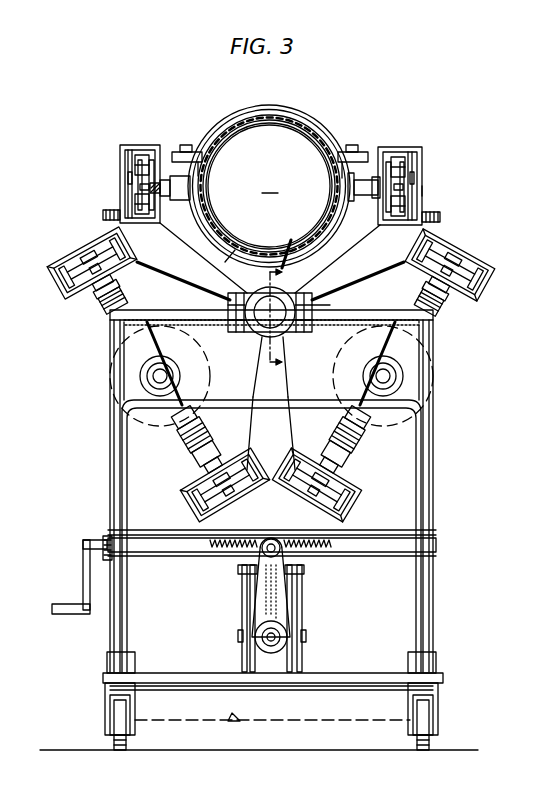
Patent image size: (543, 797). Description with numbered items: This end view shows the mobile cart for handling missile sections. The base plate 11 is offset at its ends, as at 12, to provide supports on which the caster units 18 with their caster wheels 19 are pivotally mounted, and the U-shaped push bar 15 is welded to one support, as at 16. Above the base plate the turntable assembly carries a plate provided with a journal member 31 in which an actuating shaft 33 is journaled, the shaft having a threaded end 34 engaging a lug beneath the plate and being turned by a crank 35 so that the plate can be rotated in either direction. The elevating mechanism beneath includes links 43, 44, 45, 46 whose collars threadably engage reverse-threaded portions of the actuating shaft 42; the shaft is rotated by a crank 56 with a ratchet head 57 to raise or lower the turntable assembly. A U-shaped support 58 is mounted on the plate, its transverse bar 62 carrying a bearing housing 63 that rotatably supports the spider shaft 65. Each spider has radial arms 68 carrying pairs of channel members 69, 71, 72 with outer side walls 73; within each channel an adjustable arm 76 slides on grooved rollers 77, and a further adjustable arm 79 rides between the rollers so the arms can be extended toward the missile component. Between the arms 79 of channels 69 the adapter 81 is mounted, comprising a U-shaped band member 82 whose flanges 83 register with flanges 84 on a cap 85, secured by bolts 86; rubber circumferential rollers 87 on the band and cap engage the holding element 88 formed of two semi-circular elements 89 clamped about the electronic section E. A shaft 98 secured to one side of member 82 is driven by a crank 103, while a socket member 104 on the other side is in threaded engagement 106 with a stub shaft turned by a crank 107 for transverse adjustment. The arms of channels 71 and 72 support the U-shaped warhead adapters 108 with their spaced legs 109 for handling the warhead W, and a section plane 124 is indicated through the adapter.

The base plate 11 is at (228, 724).
The offset 12 is at (312, 733).
The push bar 15 is at (214, 400).
The weld 16 is at (106, 676).
The caster unit 18 is at (110, 702).
The caster wheel 19 is at (114, 740).
The journal member 31 is at (104, 545).
The actuating shaft 33 is at (182, 550).
The threaded end 34 is at (232, 552).
The crank 35 is at (70, 606).
The actuating shaft 42 is at (286, 636).
The link 43 is at (242, 612).
The link 44 is at (250, 655).
The link 45 is at (302, 648).
The link 46 is at (302, 663).
The crank 56 is at (276, 581).
The ratchet head 57 is at (278, 632).
The U-shaped support 58 is at (110, 340).
The transverse bar 62 is at (186, 318).
The bearing housing 63 is at (296, 310).
The shaft 65 is at (332, 307).
The arm 68 is at (178, 272).
The channel member 69 is at (120, 146).
The channel member 71 is at (470, 252).
The channel member 72 is at (60, 280).
The outer side wall 73 is at (424, 190).
The adjustable arm 76 is at (128, 178).
The grooved roller 77 is at (142, 160).
The adjustable arm 79 is at (148, 187).
The adapter 81 is at (306, 110).
The U-shaped member 82 is at (236, 252).
The flange 83 is at (356, 178).
The flange 84 is at (348, 175).
The cap 85 is at (290, 116).
The bolt 86 is at (192, 150).
The circumferential roller 87 is at (256, 120).
The holding element 88 is at (276, 118).
The semi-circular element 89 is at (272, 125).
The shaft 98 is at (352, 204).
The crank 103 is at (440, 217).
The socket member 104 is at (176, 200).
The threaded engagement 106 is at (160, 188).
The crank 107 is at (103, 215).
The warhead adapter 108 is at (138, 378).
The leg 109 is at (160, 352).
The section plane 124 is at (288, 245).
The electronic section E is at (270, 184).
The warhead W is at (110, 401).